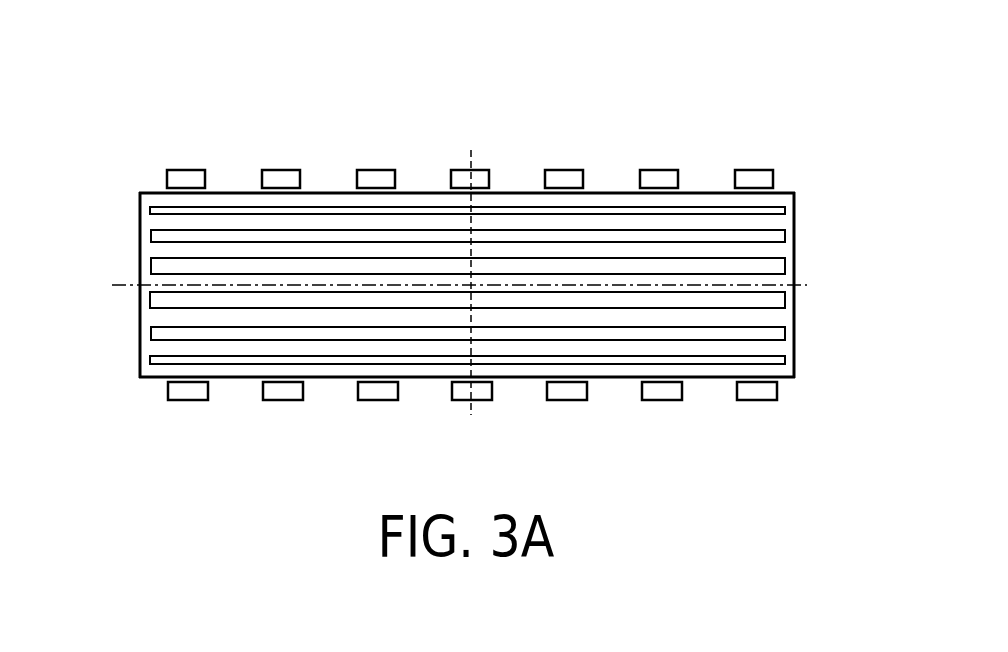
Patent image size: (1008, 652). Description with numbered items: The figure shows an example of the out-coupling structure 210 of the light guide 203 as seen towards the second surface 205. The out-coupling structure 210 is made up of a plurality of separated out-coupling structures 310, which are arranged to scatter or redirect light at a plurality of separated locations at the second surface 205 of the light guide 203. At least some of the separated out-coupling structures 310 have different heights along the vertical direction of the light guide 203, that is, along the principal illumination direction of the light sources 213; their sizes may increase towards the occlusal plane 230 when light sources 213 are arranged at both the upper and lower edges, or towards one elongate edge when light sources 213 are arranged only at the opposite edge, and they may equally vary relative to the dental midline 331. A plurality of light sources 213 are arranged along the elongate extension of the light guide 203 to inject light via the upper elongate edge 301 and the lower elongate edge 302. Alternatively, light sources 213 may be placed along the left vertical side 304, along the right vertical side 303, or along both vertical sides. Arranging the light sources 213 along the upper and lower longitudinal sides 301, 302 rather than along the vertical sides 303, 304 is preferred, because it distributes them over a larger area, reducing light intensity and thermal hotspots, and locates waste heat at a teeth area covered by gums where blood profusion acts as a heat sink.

The out-coupling structure 210 is at (122, 86).
The second surface 205 is at (230, 200).
The light sources 213 is at (376, 170).
The upper elongate edge 301 is at (515, 192).
The lower elongate edge 302 is at (613, 380).
The right vertical side 303 is at (794, 346).
The left vertical side 304 is at (140, 303).
The separated out-coupling structures 310 is at (150, 235).
The light guide 203 is at (150, 333).
The occlusal plane 230 is at (482, 285).
The dental midline 331 is at (471, 300).